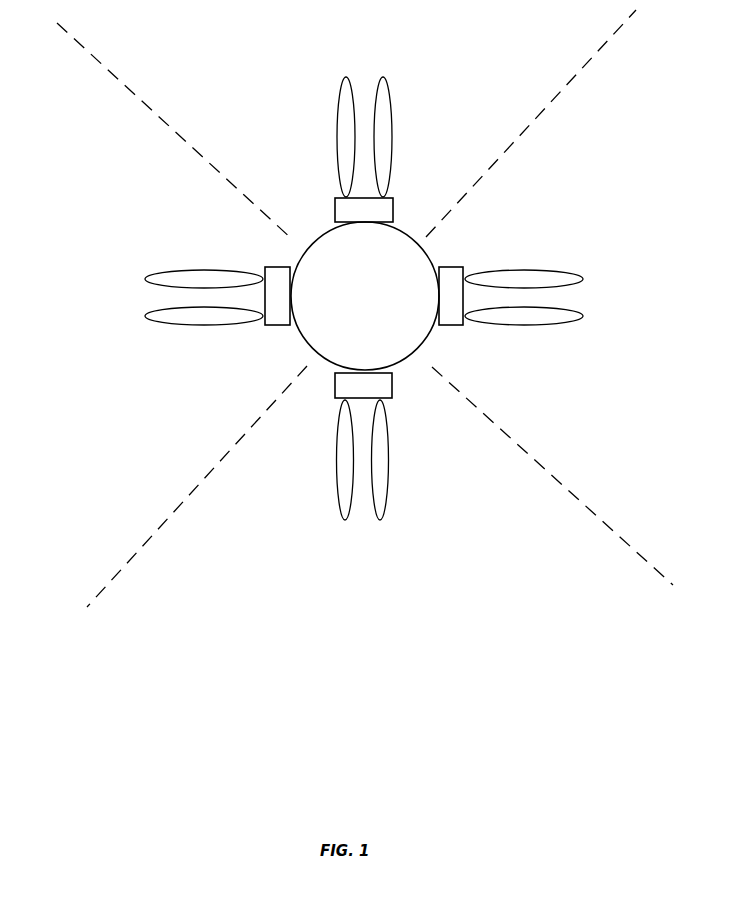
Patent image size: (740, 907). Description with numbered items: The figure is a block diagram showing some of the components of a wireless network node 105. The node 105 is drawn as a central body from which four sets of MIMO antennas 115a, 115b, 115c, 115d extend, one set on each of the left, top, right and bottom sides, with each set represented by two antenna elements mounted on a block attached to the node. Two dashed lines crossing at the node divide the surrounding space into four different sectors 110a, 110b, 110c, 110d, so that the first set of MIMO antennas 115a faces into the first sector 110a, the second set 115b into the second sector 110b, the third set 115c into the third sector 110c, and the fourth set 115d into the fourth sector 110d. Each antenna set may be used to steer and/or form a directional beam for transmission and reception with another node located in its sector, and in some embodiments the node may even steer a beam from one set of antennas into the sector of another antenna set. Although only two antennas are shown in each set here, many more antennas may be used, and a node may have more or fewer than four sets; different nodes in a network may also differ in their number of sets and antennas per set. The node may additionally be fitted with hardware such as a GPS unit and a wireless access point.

The wireless network node 105 is at (381, 309).
The sector 110a is at (72, 171).
The sector 110b is at (487, 102).
The sector 110c is at (676, 225).
The sector 110d is at (273, 524).
The set of MIMO antennas 115a is at (187, 270).
The set of MIMO antennas 115b is at (346, 82).
The set of MIMO antennas 115c is at (563, 272).
The set of MIMO antennas 115d is at (388, 498).